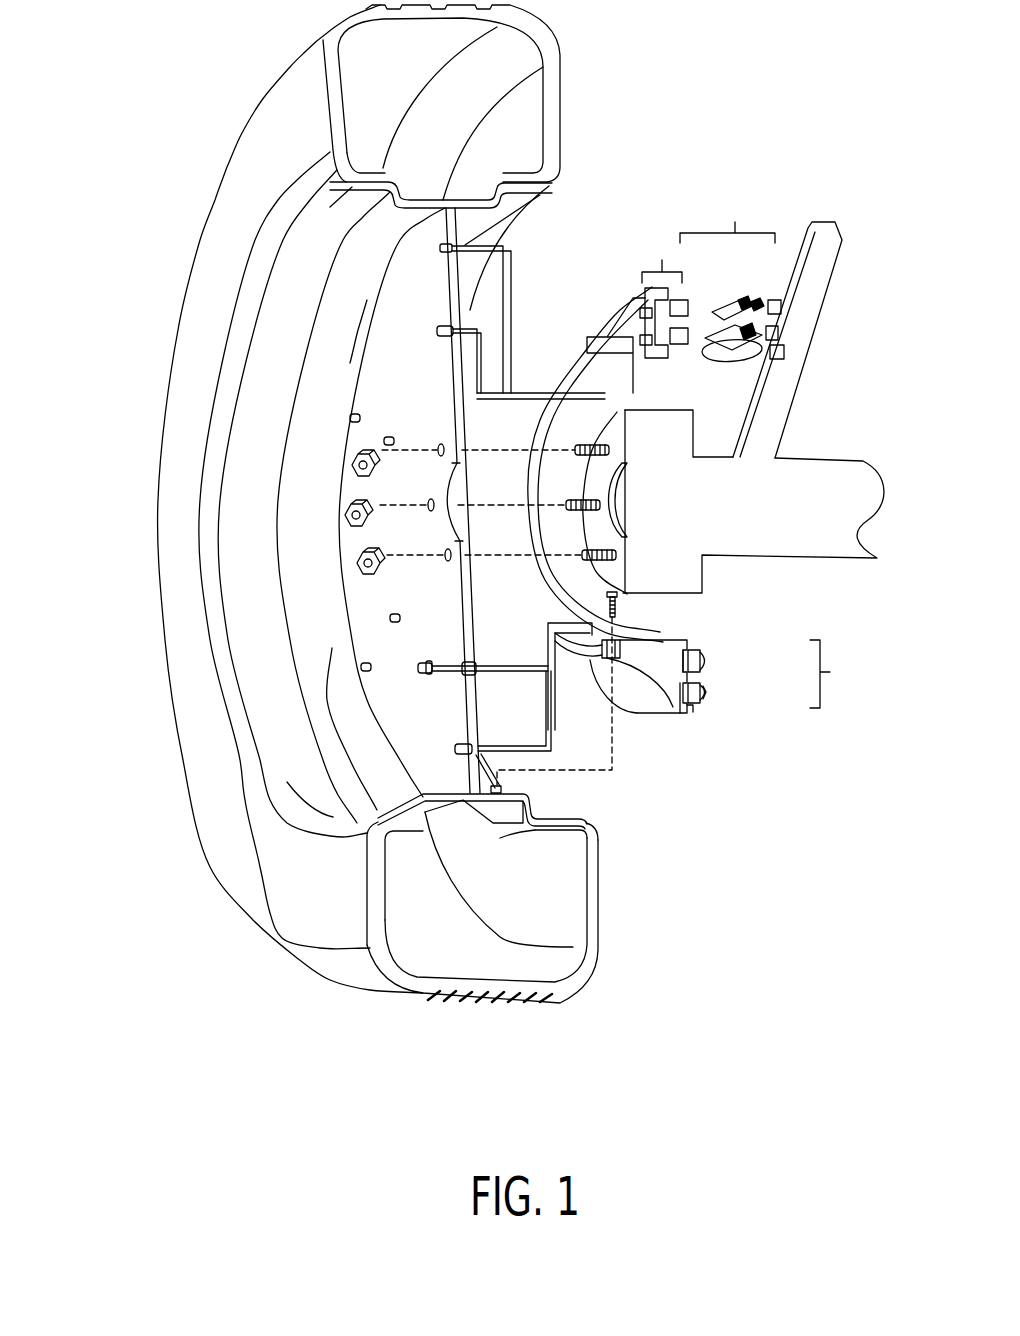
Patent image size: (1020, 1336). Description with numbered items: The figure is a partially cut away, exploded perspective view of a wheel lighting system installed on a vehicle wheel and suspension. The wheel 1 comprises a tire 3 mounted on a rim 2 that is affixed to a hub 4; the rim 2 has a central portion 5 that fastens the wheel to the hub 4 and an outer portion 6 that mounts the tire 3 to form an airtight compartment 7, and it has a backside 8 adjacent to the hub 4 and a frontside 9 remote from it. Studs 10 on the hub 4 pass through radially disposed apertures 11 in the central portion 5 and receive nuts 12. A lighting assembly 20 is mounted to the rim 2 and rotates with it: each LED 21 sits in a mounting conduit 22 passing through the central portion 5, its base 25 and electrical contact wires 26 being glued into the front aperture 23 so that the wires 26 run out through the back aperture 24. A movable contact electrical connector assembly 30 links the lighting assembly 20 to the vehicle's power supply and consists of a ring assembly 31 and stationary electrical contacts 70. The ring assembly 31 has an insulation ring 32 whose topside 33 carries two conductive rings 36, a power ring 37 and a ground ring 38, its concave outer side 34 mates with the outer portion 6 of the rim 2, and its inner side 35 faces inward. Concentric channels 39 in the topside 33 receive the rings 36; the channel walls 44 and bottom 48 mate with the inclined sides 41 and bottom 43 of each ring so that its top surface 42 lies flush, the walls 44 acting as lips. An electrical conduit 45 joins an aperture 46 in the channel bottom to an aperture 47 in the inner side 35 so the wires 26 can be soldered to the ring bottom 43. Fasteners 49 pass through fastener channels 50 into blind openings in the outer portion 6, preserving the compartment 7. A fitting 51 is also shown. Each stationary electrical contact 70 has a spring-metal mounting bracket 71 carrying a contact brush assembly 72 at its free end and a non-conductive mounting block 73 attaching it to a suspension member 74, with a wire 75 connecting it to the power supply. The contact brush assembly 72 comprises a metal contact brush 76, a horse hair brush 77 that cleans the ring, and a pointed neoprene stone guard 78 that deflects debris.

The wheel 1 is at (257, 888).
The rim 2 is at (323, 822).
The tire 3 is at (288, 953).
The hub 4 is at (693, 573).
The central portion 5 is at (390, 380).
The outer portion 6 is at (387, 193).
The airtight compartment 7 is at (438, 960).
The backside 8 is at (277, 300).
The frontside 9 is at (533, 807).
The studs 10 is at (597, 563).
The apertures 11 is at (435, 450).
The nuts 12 is at (358, 560).
The lighting assembly 20 is at (413, 668).
The LED 21 is at (437, 331).
The mounting conduit 22 is at (460, 247).
The front aperture 23 is at (467, 673).
The back aperture 24 is at (475, 668).
The LED base 25 is at (428, 660).
The electrical contact wires 26 is at (510, 392).
The movable contact electrical connector assembly 30 is at (727, 216).
The ring assembly 31 is at (662, 255).
The insulation ring 32 is at (673, 707).
The topside 33 is at (688, 713).
The outer side 34 is at (633, 715).
The inner side 35 is at (640, 630).
The conductive rings 36 is at (839, 674).
The power ring 37 is at (725, 640).
The ground ring 38 is at (732, 682).
The channels 39 is at (680, 653).
The sides 41 is at (710, 697).
The top surface 42 is at (710, 688).
The bottom 43 is at (702, 705).
The walls 44 is at (647, 290).
The electrical conduit 45 is at (633, 310).
The aperture 46 is at (677, 320).
The aperture 47 is at (645, 345).
The bottom 48 is at (678, 344).
The fasteners 49 is at (623, 605).
The fastener channels 50 is at (600, 658).
The fitting 51 is at (497, 792).
The stationary electrical contact 70 is at (763, 363).
The mounting bracket 71 is at (773, 347).
The contact brush assembly 72 is at (777, 302).
The mounting block 73 is at (793, 407).
The suspension member 74 is at (770, 357).
The wire 75 is at (768, 313).
The contact brush 76 is at (758, 300).
The horse hair brush 77 is at (740, 303).
The stone guard 78 is at (727, 310).